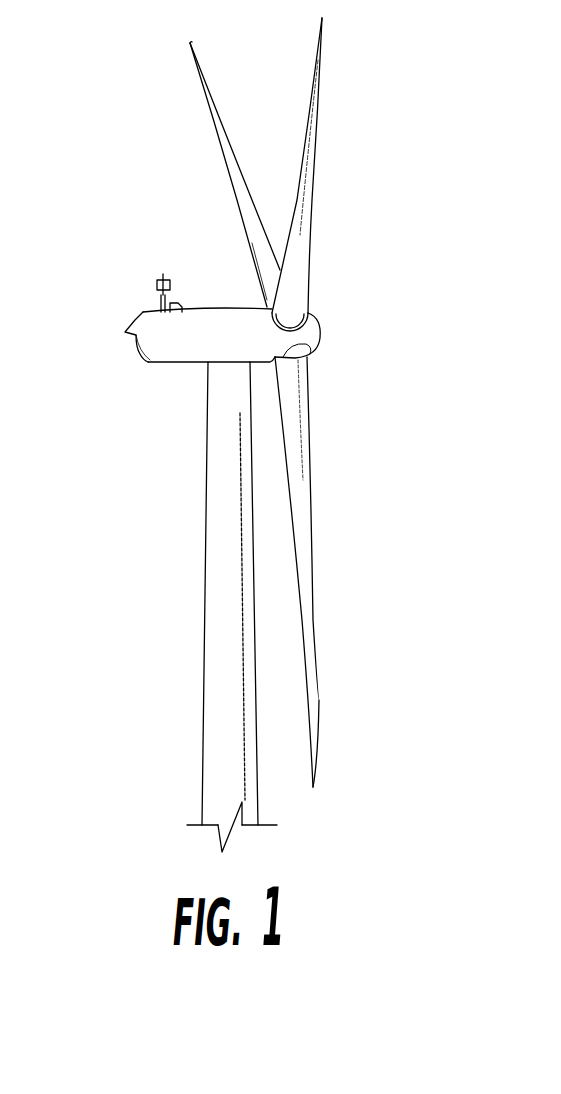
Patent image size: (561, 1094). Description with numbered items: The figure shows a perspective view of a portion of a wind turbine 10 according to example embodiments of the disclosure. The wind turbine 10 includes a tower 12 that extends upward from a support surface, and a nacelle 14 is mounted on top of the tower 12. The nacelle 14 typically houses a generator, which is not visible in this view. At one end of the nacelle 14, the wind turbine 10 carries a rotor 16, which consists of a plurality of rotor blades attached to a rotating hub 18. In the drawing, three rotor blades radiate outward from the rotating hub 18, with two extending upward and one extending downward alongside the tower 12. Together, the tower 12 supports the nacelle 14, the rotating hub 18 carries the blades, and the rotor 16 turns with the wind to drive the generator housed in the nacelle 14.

The wind turbine 10 is at (103, 123).
The tower 12 is at (208, 643).
The nacelle 14 is at (175, 363).
The rotor 16 is at (333, 328).
The rotating hub 18 is at (320, 338).